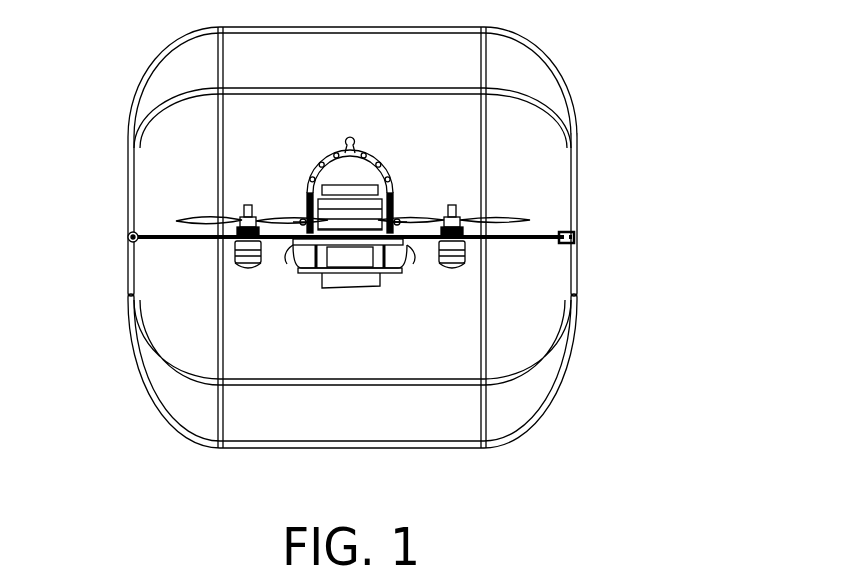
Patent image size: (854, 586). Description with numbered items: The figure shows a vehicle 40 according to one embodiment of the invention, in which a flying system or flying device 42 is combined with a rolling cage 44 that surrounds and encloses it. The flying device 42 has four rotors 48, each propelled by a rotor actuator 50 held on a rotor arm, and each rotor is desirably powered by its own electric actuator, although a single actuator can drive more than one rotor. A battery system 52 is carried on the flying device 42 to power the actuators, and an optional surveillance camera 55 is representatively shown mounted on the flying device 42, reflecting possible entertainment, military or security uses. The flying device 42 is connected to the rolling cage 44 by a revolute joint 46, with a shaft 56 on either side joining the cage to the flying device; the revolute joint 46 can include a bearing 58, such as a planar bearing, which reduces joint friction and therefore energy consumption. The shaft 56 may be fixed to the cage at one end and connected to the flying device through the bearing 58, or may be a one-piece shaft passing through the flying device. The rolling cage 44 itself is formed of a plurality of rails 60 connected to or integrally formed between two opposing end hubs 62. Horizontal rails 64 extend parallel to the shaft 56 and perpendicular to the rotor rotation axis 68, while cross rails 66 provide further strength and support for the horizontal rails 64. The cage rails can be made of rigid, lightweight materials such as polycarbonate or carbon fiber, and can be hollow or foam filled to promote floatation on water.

The vehicle 40 is at (369, 271).
The flying device 42 is at (369, 212).
The rolling cage 44 is at (384, 405).
The revolute joint 46 is at (415, 249).
The rotor 48 is at (196, 217).
The rotor actuator 50 is at (236, 244).
The battery system 52 is at (358, 176).
The surveillance camera 55 is at (355, 289).
The shaft 56 is at (519, 241).
The bearing 58 is at (578, 242).
The rail 60 is at (178, 432).
The end hub 62 is at (577, 202).
The horizontal rail 64 is at (433, 450).
The cross rail 66 is at (222, 343).
The rotor rotation axis 68 is at (452, 194).